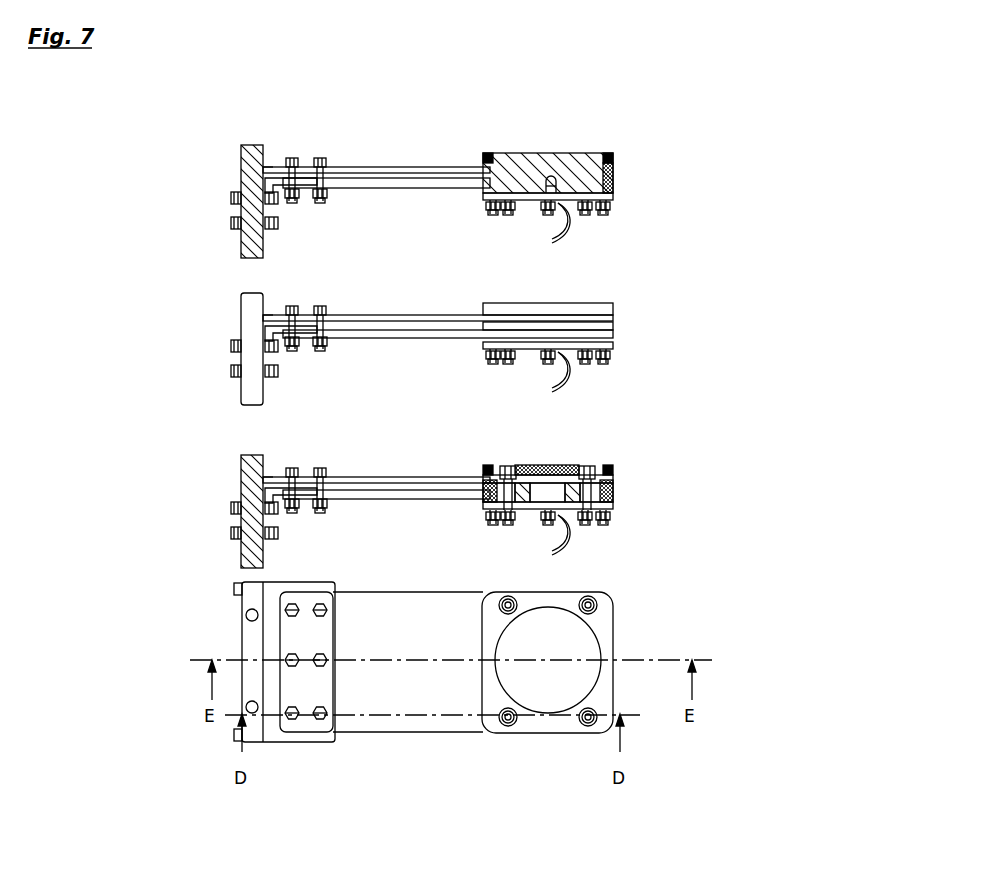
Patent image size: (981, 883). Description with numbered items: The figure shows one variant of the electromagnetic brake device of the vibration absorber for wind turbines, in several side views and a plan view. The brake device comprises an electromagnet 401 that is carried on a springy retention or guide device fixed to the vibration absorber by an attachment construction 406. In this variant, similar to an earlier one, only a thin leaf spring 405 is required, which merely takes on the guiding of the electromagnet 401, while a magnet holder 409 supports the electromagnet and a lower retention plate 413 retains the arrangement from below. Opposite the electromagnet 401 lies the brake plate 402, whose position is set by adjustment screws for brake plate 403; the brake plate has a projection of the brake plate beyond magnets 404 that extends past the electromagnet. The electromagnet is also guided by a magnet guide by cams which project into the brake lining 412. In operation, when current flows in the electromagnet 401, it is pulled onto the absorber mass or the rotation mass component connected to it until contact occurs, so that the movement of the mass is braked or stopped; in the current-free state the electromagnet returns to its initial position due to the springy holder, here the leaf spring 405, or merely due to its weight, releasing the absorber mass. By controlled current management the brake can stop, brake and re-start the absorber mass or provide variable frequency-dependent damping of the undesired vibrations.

The electromagnet 401 is at (548, 158).
The brake plate 402 is at (613, 157).
The adjustment screws for brake plate 403 is at (609, 208).
The projection of the brake plate beyond magnets 404 is at (489, 156).
The leaf spring 405 is at (372, 318).
The attachment construction 406 is at (248, 322).
The magnet holder 409 is at (363, 497).
The magnet guide by cams which project into the brake lining 412 is at (587, 467).
The lower retention plate 413 is at (496, 504).